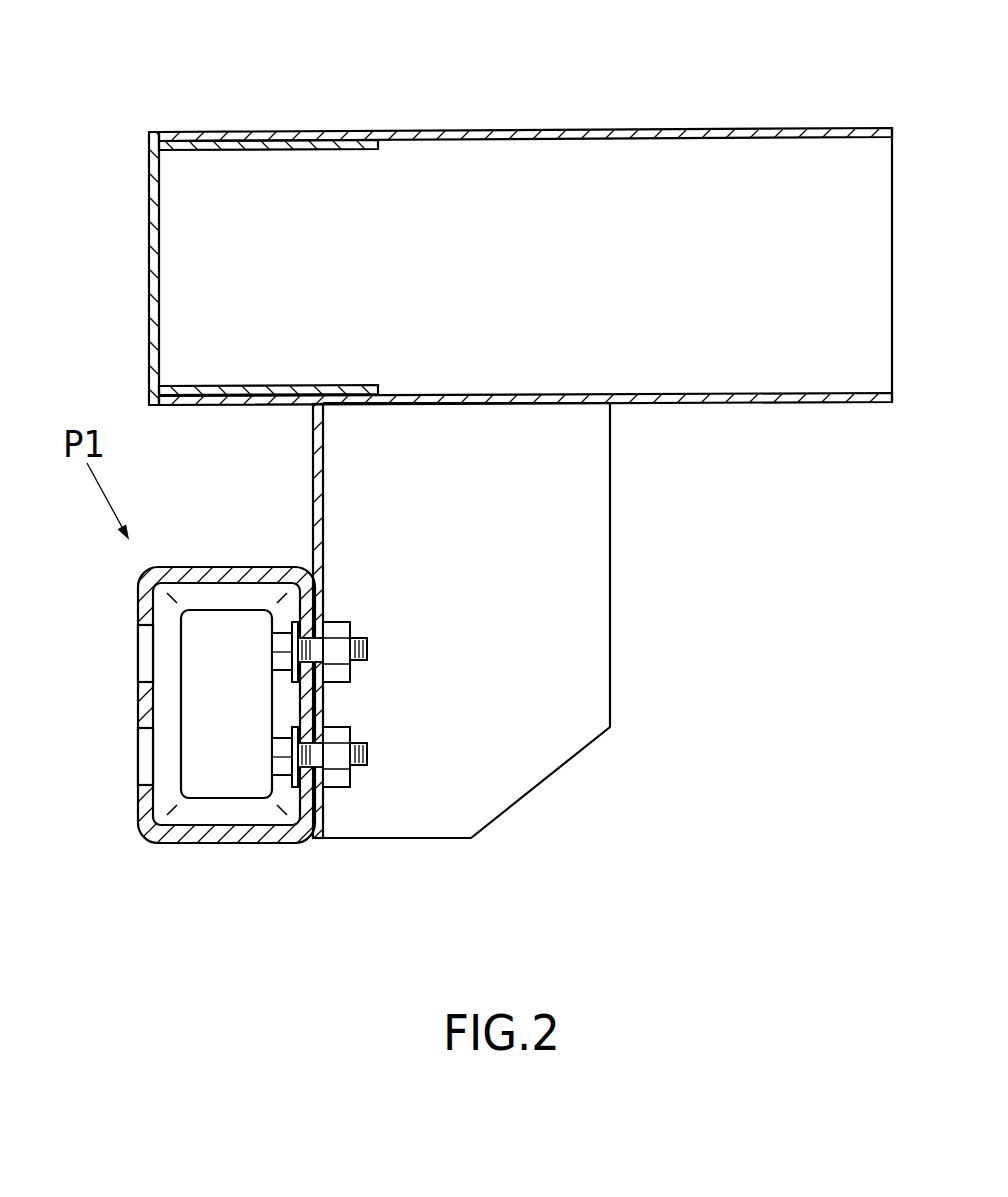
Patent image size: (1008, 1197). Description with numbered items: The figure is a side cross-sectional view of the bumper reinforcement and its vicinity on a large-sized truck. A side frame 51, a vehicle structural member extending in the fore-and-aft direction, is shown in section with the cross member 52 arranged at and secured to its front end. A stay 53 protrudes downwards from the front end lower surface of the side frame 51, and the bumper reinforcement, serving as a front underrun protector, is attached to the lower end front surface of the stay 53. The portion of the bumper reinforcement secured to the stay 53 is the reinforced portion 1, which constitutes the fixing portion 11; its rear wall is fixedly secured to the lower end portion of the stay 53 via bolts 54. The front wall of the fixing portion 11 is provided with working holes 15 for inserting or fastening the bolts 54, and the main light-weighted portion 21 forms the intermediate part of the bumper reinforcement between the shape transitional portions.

The reinforced portion 1 is at (183, 752).
The fixing portion 11 is at (226, 704).
The working hole 15 is at (148, 653).
The main light-weighted portion 21 is at (233, 595).
The side frame 51 is at (548, 180).
The cross member 52 is at (152, 248).
The stay 53 is at (569, 620).
The bolt 54 is at (368, 651).